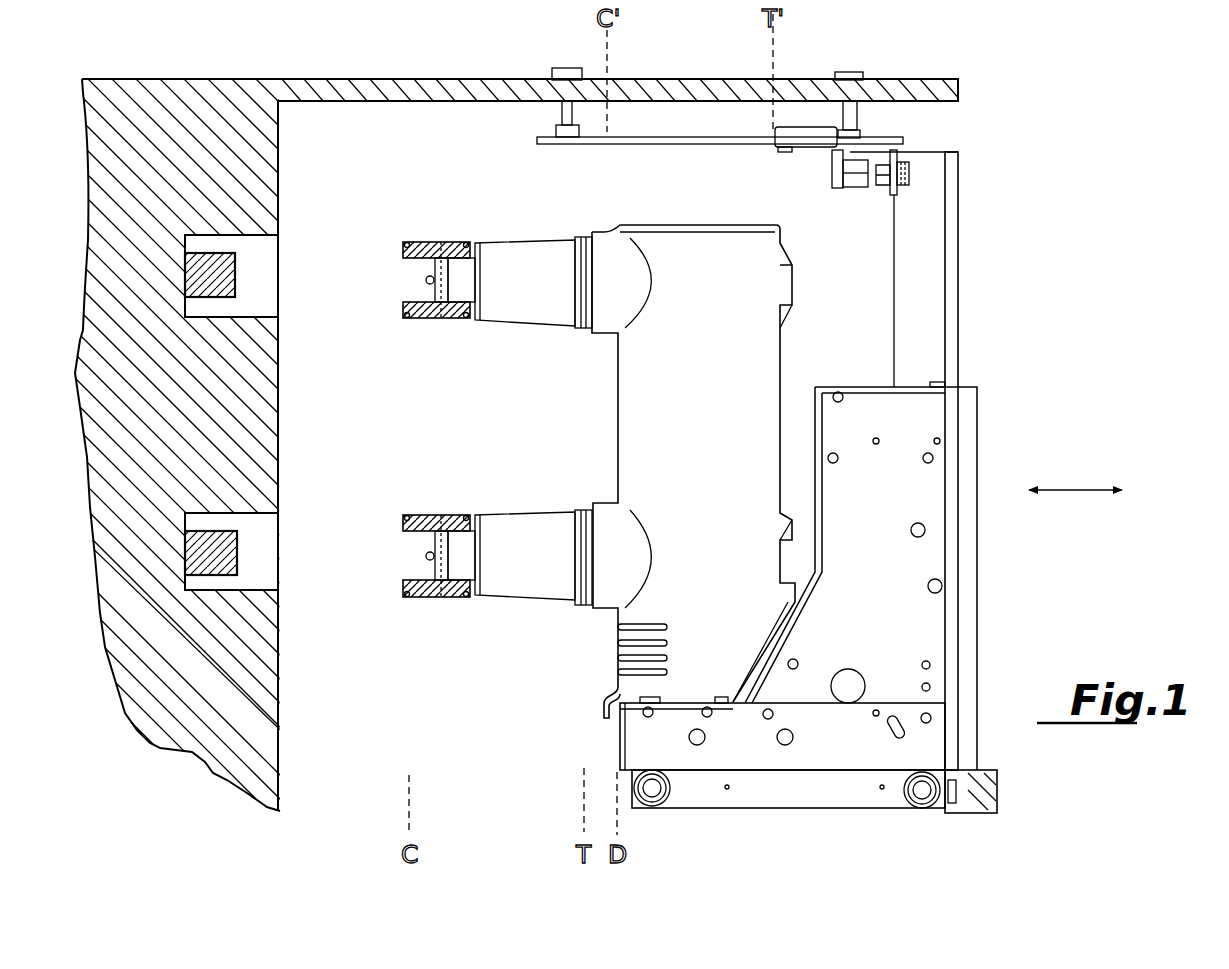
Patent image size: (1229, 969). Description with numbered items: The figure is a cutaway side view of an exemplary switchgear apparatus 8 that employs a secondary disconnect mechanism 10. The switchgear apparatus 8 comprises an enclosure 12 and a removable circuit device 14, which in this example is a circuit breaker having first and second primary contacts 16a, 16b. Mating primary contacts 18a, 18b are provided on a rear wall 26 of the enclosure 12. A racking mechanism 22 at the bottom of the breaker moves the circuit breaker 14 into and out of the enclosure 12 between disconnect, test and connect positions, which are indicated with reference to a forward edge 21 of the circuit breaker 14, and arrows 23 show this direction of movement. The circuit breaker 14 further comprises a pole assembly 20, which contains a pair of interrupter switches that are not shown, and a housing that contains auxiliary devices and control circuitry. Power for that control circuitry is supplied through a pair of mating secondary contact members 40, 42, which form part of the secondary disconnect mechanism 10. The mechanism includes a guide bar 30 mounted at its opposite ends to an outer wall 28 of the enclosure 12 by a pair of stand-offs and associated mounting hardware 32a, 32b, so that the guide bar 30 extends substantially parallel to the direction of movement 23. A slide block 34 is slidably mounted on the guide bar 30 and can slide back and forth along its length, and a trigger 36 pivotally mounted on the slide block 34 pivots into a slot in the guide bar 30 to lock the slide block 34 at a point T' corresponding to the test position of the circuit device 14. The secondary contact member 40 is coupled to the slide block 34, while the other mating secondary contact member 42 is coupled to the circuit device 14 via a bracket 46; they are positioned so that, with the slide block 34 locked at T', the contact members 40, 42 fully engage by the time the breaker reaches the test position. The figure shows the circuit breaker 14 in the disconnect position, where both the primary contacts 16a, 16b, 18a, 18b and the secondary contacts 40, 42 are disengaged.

The switchgear apparatus 8 is at (1058, 219).
The secondary disconnect mechanism 10 is at (768, 157).
The enclosure 12 is at (206, 92).
The removable circuit device 14 is at (978, 653).
The first primary contact 16a is at (437, 243).
The second primary contact 16b is at (437, 515).
The mating primary contact 18a is at (268, 271).
The mating primary contact 18b is at (268, 546).
The pole assembly 20 is at (632, 407).
The forward edge 21 is at (612, 727).
The racking mechanism 22 is at (785, 812).
The arrows 23 is at (1075, 490).
The rear wall 26 is at (283, 436).
The outer wall 28 is at (394, 88).
The guide bar 30 is at (660, 144).
The stand-off and mounting hardware 32a is at (560, 113).
The stand-off and mounting hardware 32b is at (834, 83).
The slide block 34 is at (806, 141).
The trigger 36 is at (832, 161).
The secondary contact member 40 is at (862, 188).
The mating secondary contact member 42 is at (888, 192).
The bracket 46 is at (901, 183).